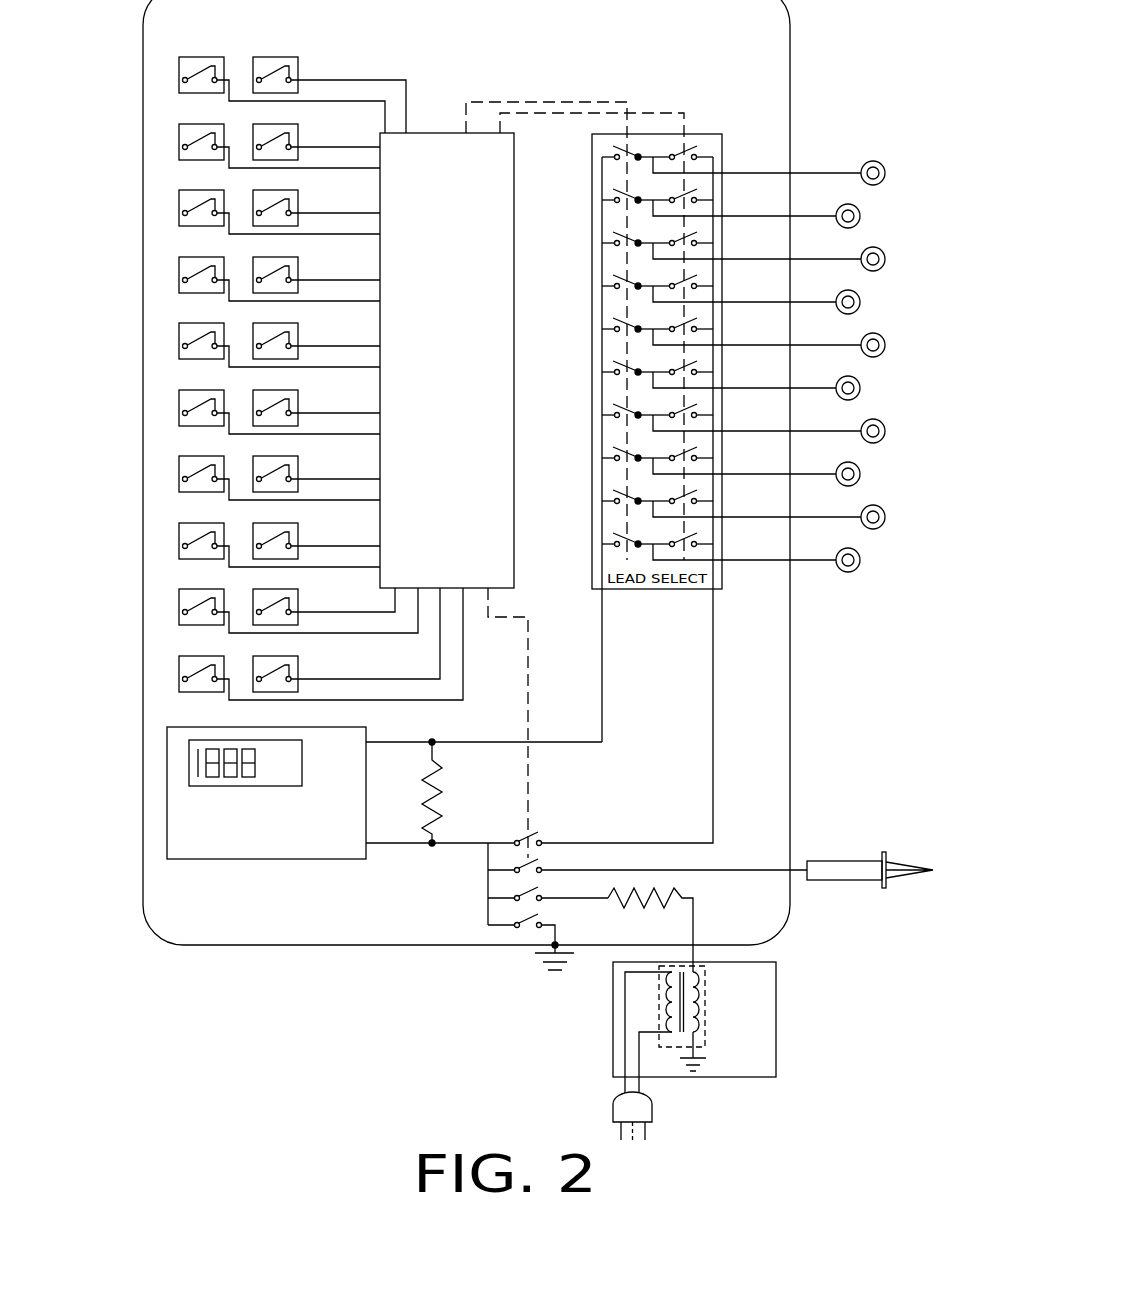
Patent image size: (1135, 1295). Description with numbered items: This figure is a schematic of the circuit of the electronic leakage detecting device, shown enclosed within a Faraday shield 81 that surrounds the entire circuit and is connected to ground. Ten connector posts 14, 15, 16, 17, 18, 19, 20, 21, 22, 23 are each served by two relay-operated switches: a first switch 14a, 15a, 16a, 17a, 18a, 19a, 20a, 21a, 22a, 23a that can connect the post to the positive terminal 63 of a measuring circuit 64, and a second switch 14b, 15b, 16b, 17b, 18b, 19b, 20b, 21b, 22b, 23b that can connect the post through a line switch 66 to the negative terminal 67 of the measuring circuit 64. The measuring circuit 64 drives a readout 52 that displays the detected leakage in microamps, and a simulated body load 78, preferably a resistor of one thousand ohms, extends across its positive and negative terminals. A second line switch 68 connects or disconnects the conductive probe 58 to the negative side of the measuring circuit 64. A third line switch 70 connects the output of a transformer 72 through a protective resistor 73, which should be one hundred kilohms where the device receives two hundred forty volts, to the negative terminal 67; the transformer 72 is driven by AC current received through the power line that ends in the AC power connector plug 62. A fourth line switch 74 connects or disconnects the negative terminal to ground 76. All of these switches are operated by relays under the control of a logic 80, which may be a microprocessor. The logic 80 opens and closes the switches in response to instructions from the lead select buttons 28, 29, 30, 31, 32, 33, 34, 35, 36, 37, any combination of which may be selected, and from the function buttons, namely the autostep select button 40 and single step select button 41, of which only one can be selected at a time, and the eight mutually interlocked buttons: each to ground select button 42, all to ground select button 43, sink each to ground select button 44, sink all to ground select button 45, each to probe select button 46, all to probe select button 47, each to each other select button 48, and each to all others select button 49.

The connector post 14 is at (885, 168).
The connector post 15 is at (860, 211).
The connector post 16 is at (885, 254).
The connector post 17 is at (860, 297).
The connector post 18 is at (885, 340).
The connector post 19 is at (860, 383).
The connector post 20 is at (885, 426).
The connector post 21 is at (860, 469).
The connector post 22 is at (885, 512).
The connector post 23 is at (860, 555).
The first switch 14a is at (615, 153).
The first switch 15a is at (615, 196).
The first switch 16a is at (615, 239).
The first switch 17a is at (615, 282).
The first switch 18a is at (615, 325).
The first switch 19a is at (615, 368).
The first switch 20a is at (615, 411).
The first switch 21a is at (615, 454).
The first switch 22a is at (615, 497).
The first switch 23a is at (615, 540).
The second switch 14b is at (700, 152).
The second switch 15b is at (700, 195).
The second switch 16b is at (700, 238).
The second switch 17b is at (700, 281).
The second switch 18b is at (700, 324).
The second switch 19b is at (700, 367).
The second switch 20b is at (700, 410).
The second switch 21b is at (700, 453).
The second switch 22b is at (700, 496).
The second switch 23b is at (700, 539).
The lead select button 28 is at (299, 66).
The lead select button 29 is at (299, 133).
The lead select button 30 is at (299, 199).
The lead select button 31 is at (299, 266).
The lead select button 32 is at (299, 332).
The lead select button 33 is at (299, 399).
The lead select button 34 is at (299, 465).
The lead select button 35 is at (299, 532).
The lead select button 36 is at (299, 598).
The lead select button 37 is at (299, 665).
The autostep select button 40 is at (178, 72).
The single step select button 41 is at (178, 139).
The each to ground select button 42 is at (178, 205).
The all to ground select button 43 is at (178, 272).
The sink each to ground select button 44 is at (178, 338).
The sink all to ground select button 45 is at (178, 405).
The each to probe select button 46 is at (178, 471).
The all to probe select button 47 is at (178, 538).
The each to each other select button 48 is at (178, 604).
The each to all others select button 49 is at (178, 671).
The readout 52 is at (221, 793).
The conductive probe 58 is at (897, 857).
The AC power connector plug 62 is at (653, 1108).
The positive terminal 63 is at (368, 750).
The measuring circuit 64 is at (346, 778).
The line switch 66 is at (542, 837).
The negative terminal 67 is at (368, 855).
The second line switch 68 is at (514, 872).
The third line switch 70 is at (512, 901).
The transformer 72 is at (707, 1047).
The protective resistor 73 is at (672, 890).
The fourth line switch 74 is at (515, 928).
The ground 76 is at (555, 975).
The simulated body load 78 is at (445, 792).
The logic 80 is at (428, 552).
The Faraday shield 81 is at (792, 60).